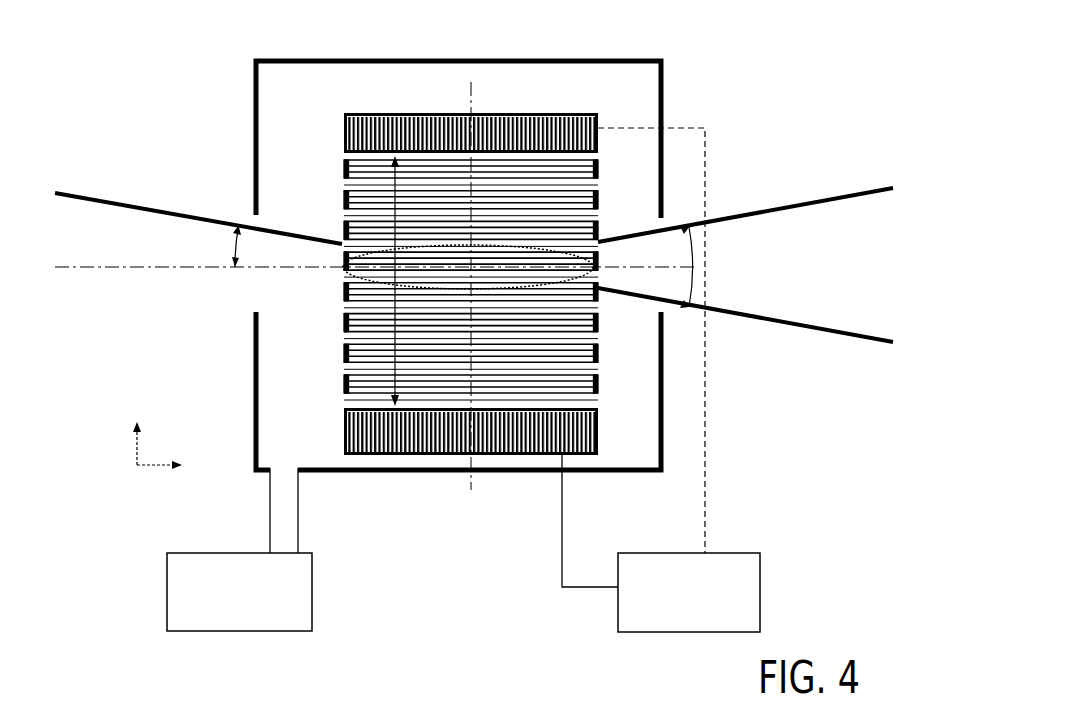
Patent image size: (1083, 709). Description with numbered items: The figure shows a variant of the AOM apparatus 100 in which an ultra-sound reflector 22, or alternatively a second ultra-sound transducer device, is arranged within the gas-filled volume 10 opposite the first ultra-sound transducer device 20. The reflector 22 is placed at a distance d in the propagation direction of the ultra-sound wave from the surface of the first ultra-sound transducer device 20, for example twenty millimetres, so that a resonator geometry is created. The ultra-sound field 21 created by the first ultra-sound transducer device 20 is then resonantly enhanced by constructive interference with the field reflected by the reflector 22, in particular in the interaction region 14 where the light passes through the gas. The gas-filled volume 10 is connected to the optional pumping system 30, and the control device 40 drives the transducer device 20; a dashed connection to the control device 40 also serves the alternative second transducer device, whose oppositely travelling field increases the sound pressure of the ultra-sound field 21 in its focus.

The AOM apparatus 100 is at (777, 461).
The gas-filled volume 10 is at (603, 102).
The ultra-sound reflector 22 is at (386, 118).
The first ultra-sound transducer device 20 is at (628, 451).
The ultra-sound field 21 is at (343, 356).
The interaction region 14 is at (506, 243).
The pumping system 30 is at (300, 629).
The control device 40 is at (750, 629).